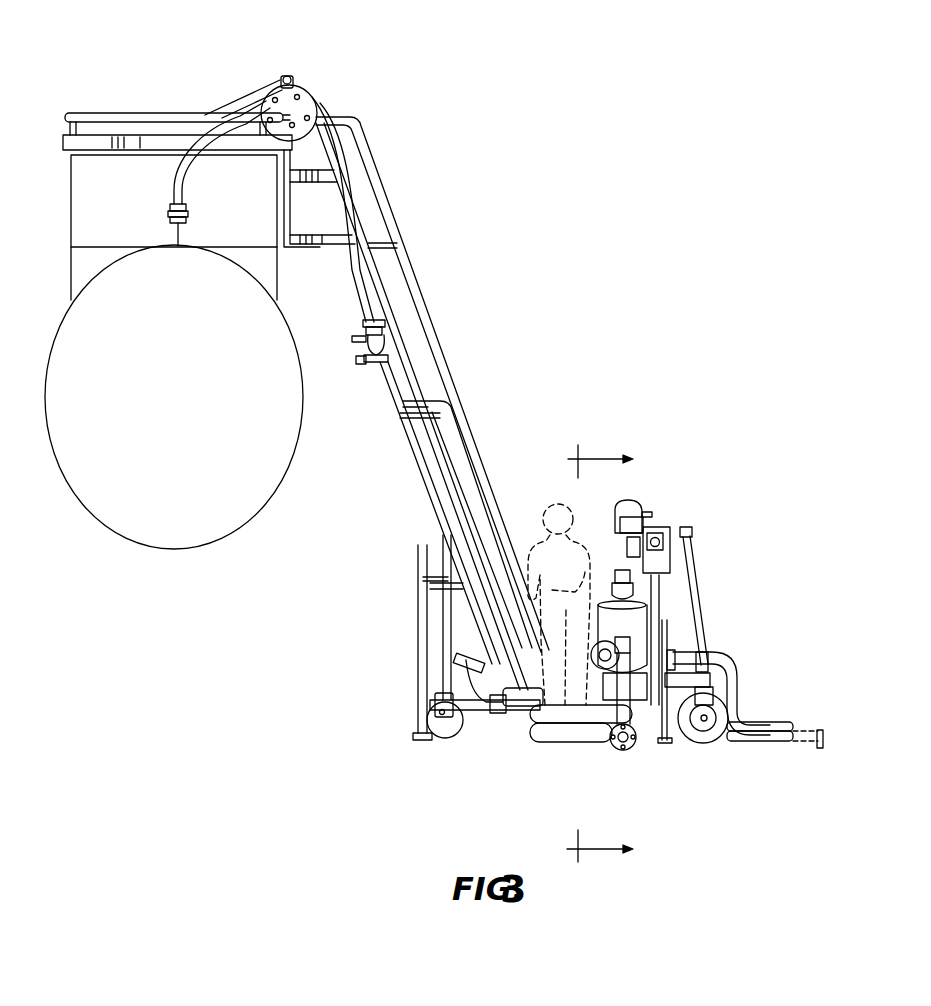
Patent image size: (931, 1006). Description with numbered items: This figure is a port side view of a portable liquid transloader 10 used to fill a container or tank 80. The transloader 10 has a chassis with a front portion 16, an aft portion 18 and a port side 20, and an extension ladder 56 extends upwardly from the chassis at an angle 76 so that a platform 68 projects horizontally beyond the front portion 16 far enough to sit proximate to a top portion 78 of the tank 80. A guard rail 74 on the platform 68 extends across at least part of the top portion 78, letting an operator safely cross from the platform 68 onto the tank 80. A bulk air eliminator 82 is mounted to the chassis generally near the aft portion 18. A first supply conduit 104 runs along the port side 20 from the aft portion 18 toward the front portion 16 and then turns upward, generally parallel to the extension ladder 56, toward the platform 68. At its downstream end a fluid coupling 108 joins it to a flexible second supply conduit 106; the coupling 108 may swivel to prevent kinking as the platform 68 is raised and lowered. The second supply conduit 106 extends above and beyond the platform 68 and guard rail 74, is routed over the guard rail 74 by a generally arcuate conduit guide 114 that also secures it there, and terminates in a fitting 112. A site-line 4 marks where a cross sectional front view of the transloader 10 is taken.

The transloader 10 is at (662, 192).
The front portion 16 is at (392, 719).
The aft portion 18 is at (648, 737).
The port side 20 is at (483, 738).
The extension ladder 56 is at (497, 414).
The platform 68 is at (305, 250).
The guard rail 74 is at (124, 105).
The angle 76 is at (577, 704).
The top portion 78 is at (133, 242).
The tank 80 is at (54, 341).
The bulk air eliminator 82 is at (605, 622).
The first supply conduit 104 is at (412, 472).
The second supply conduit 106 is at (190, 178).
The fluid coupling 108 is at (388, 343).
The fitting 112 is at (188, 212).
The conduit guide 114 is at (296, 94).
The site-line 4- 4 is at (612, 654).